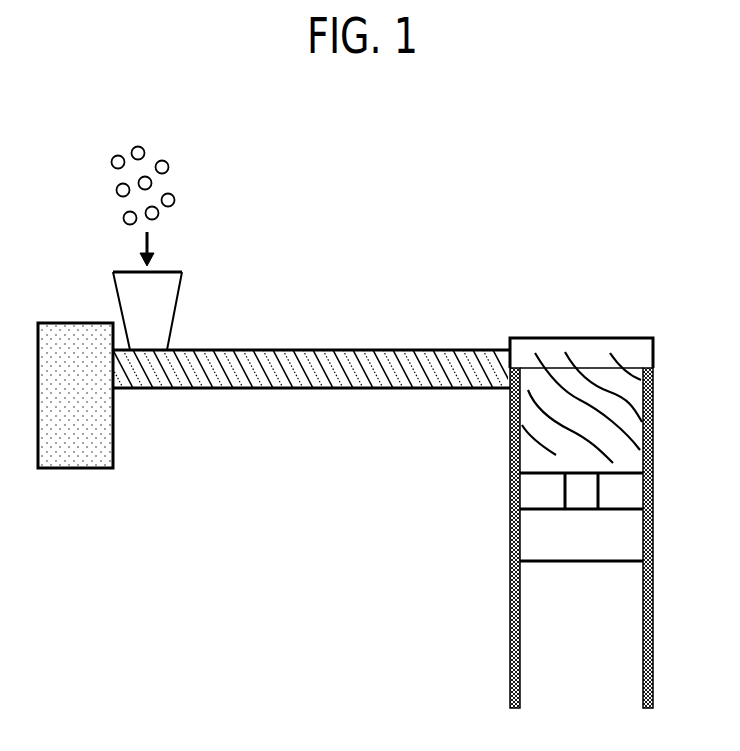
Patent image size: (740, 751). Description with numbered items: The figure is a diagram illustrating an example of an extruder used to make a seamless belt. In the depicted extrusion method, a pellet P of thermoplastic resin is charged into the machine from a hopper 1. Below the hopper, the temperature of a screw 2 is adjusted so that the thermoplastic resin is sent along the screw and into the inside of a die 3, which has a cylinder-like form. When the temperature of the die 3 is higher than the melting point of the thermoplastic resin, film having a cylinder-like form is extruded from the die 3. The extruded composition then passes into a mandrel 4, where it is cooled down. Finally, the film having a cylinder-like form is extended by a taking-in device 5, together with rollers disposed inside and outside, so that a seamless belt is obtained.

The pellet P is at (170, 166).
The hopper 1 is at (163, 315).
The screw 2 is at (294, 350).
The die 3 is at (640, 352).
The mandrel 4 is at (582, 502).
The taking-in device 5 is at (618, 551).